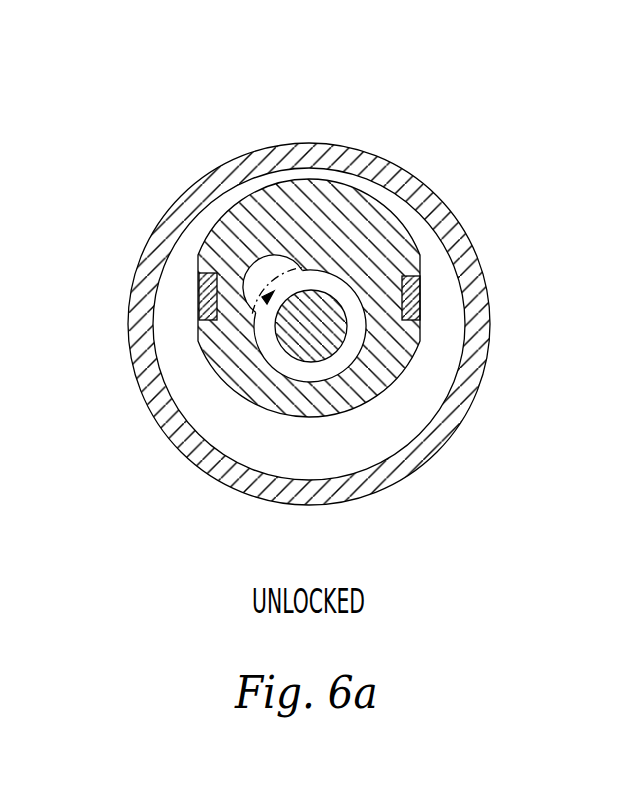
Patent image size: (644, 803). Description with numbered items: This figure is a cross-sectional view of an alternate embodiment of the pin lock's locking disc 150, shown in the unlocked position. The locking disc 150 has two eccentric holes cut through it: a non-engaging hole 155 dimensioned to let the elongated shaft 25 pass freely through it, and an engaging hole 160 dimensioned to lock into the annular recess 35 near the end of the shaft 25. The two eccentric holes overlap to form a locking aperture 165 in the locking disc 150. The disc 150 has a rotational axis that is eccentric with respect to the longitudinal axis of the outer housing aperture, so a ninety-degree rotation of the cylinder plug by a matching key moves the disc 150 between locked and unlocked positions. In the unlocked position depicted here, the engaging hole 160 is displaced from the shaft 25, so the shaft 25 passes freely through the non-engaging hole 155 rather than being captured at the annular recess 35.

The locking disc 150 is at (402, 198).
The non-engaging hole 155 is at (343, 360).
The annular recess 35 is at (353, 338).
The engaging hole 160 is at (263, 272).
The elongated shaft 25 is at (340, 292).
The locking aperture 165 is at (266, 302).